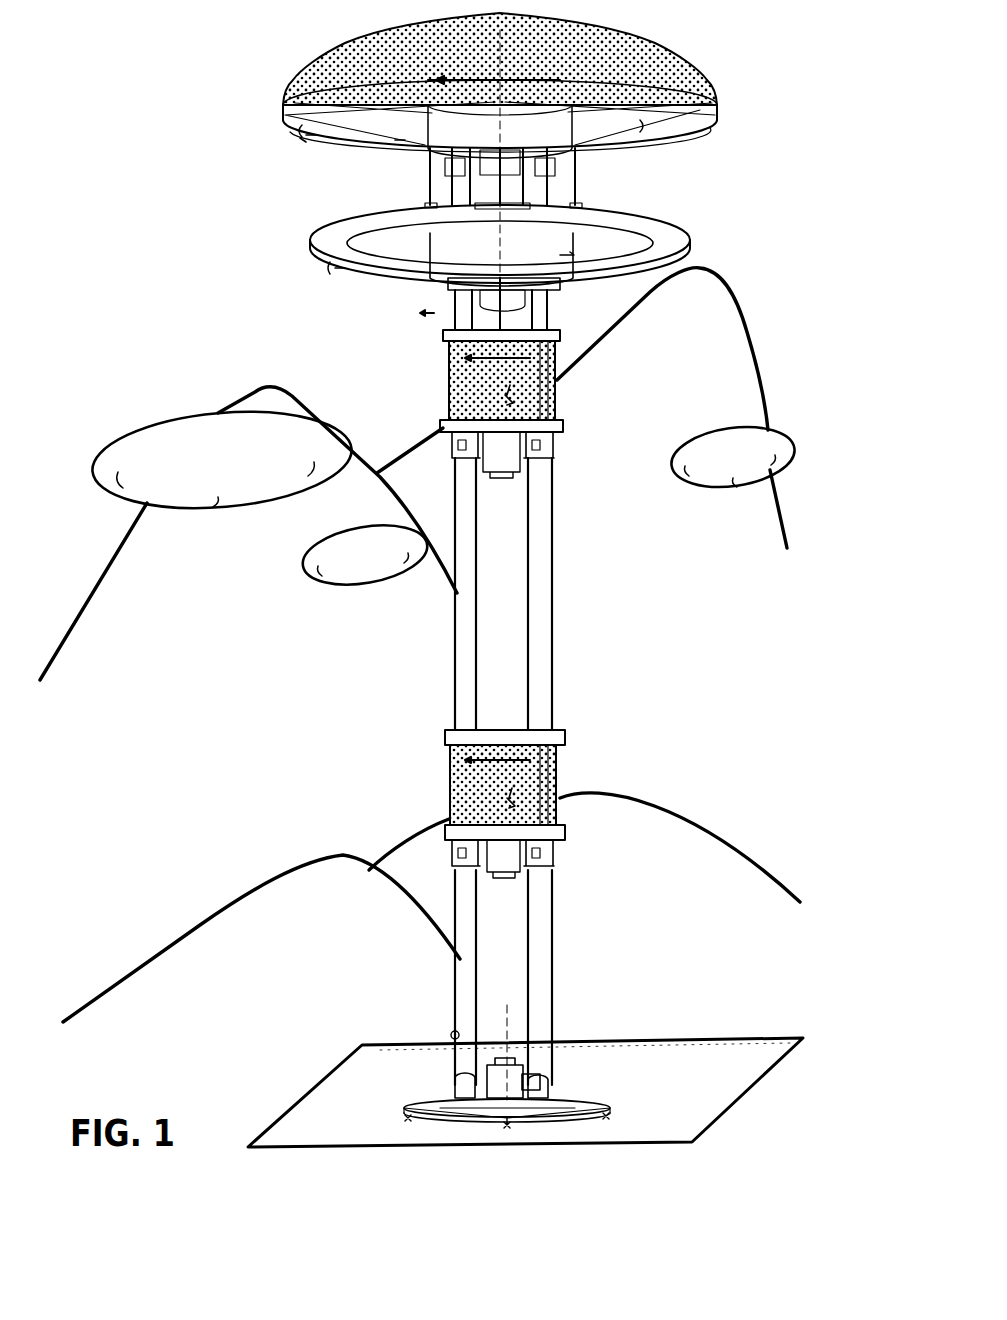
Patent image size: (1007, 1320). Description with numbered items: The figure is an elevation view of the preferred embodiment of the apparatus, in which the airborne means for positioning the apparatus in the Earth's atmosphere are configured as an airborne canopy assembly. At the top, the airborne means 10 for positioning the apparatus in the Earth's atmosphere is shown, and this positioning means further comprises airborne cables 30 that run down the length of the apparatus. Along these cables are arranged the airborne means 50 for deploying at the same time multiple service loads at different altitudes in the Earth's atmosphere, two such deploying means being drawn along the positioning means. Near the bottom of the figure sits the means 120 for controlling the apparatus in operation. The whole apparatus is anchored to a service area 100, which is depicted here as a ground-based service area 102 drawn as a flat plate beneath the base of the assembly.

The airborne means for positioning the apparatus 10 is at (283, 82).
The airborne means for deploying multiple service loads 50 is at (452, 377).
The airborne cables 30 is at (555, 563).
The service area 100 is at (380, 1073).
The means for controlling the apparatus 120 is at (538, 1072).
The ground-based service area 102 is at (688, 1072).